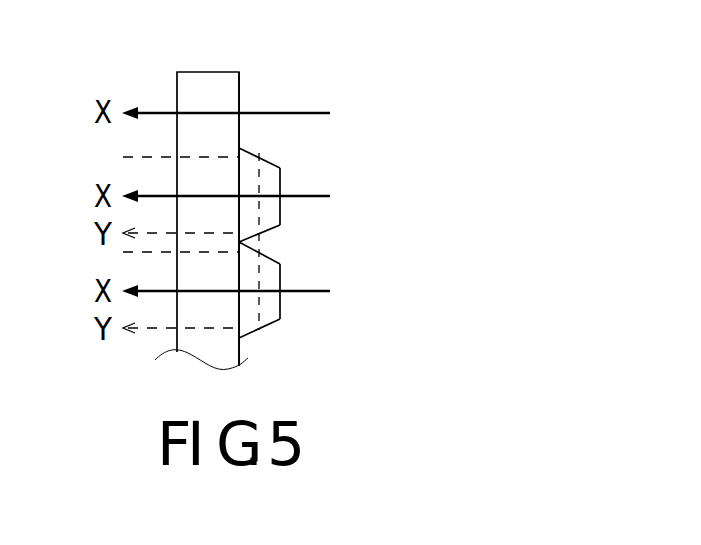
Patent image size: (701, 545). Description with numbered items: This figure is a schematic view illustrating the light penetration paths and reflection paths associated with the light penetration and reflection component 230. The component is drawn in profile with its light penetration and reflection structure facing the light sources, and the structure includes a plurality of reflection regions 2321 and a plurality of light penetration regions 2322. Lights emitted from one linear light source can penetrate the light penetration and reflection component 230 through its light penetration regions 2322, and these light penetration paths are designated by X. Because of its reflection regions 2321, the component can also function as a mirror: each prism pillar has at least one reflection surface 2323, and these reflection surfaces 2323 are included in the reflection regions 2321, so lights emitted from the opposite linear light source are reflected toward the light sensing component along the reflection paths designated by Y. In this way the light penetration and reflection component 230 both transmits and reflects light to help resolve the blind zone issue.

The light penetration and reflection component 230 is at (501, 72).
The reflection regions 2321 is at (237, 157).
The light penetration regions 2322 is at (241, 88).
The reflection surface 2323 is at (252, 153).